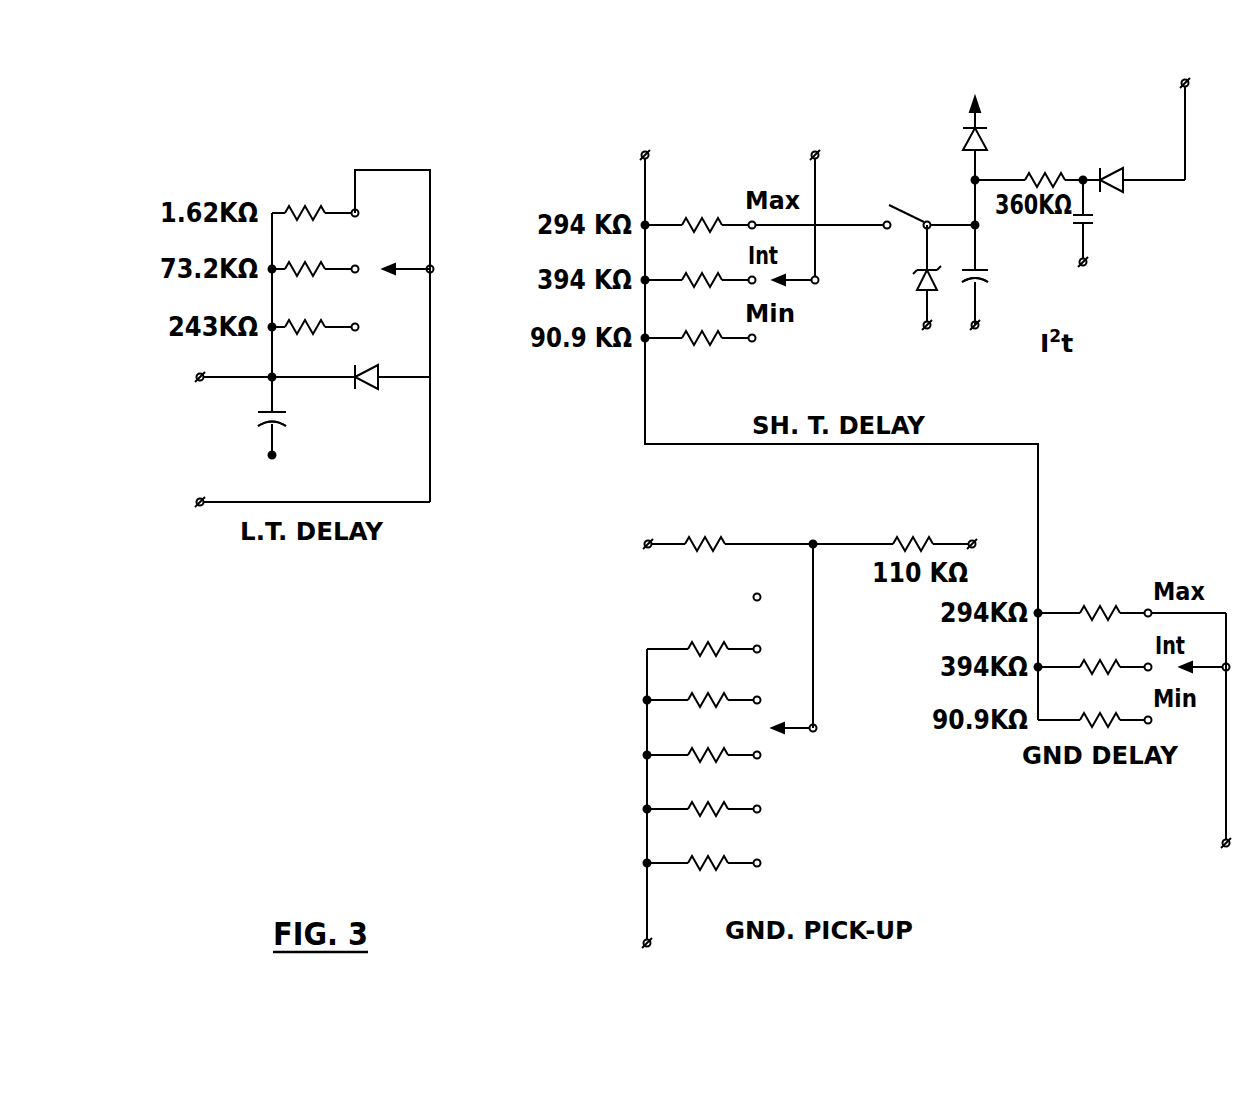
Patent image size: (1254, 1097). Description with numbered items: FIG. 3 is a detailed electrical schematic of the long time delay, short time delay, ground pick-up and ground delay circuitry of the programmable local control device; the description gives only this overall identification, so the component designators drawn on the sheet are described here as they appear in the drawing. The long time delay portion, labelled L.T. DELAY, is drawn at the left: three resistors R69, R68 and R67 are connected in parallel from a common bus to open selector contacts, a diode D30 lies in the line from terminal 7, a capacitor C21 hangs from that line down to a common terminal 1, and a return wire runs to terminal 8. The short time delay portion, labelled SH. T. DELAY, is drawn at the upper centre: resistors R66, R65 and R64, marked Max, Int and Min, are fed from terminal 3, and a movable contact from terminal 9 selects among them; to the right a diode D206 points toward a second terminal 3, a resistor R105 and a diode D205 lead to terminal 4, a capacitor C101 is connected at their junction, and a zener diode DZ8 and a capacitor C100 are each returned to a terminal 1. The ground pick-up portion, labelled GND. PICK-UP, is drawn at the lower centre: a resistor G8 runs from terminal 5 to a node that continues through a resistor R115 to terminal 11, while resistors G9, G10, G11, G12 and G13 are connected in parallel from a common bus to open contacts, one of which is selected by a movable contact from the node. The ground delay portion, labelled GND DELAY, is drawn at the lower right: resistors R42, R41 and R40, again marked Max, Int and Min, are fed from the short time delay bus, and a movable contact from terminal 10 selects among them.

The resistor R69 1.62K ohm R69 is at (315, 198).
The resistor R68 73.2K ohm R68 is at (353, 254).
The resistor R67 243K ohm R67 is at (315, 312).
The capacitor C21 .01 uF C21 is at (310, 416).
The diode D30 is at (385, 391).
The terminal 7 is at (302, 377).
The terminal 8 is at (302, 502).
The terminal 1 (common) 1 is at (623, 405).
The terminal 3 is at (809, 111).
The terminal 9 is at (814, 197).
The terminal 4 is at (1184, 113).
The terminal 5 is at (636, 544).
The terminal 11 is at (993, 544).
The terminal 10 is at (1230, 748).
The resistor R66 294K ohm (Max) R66 is at (764, 209).
The resistor R65 394K ohm (Int) R65 is at (732, 264).
The resistor R64 90.9K ohm (Min) R64 is at (700, 322).
The diode D206 is at (938, 137).
The resistor R105 360K ohm R105 is at (1037, 162).
The diode D205 is at (1141, 165).
The capacitor C101 is at (1119, 223).
The zener diode DZ8 is at (899, 273).
The capacitor C100 18 uF C100 is at (1011, 272).
The resistor G8 is at (772, 527).
The resistor R115 110K ohm R115 is at (926, 527).
The resistor G9 is at (704, 634).
The resistor G10 is at (704, 685).
The resistor G11 is at (704, 740).
The resistor G12 is at (704, 794).
The resistor G13 is at (704, 848).
The resistor R42 294K ohm (Max) R42 is at (1132, 598).
The resistor R41 394K ohm (Int) R41 is at (1134, 652).
The resistor R40 90.9K ohm (Min) R40 is at (1095, 705).